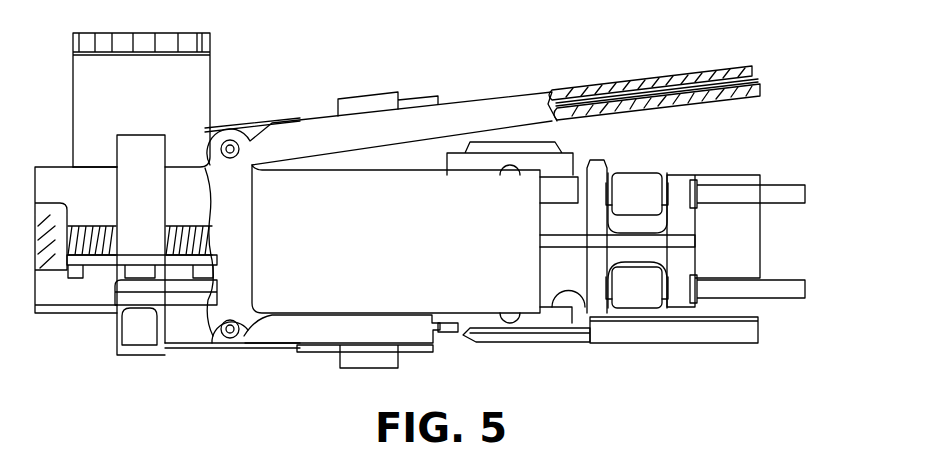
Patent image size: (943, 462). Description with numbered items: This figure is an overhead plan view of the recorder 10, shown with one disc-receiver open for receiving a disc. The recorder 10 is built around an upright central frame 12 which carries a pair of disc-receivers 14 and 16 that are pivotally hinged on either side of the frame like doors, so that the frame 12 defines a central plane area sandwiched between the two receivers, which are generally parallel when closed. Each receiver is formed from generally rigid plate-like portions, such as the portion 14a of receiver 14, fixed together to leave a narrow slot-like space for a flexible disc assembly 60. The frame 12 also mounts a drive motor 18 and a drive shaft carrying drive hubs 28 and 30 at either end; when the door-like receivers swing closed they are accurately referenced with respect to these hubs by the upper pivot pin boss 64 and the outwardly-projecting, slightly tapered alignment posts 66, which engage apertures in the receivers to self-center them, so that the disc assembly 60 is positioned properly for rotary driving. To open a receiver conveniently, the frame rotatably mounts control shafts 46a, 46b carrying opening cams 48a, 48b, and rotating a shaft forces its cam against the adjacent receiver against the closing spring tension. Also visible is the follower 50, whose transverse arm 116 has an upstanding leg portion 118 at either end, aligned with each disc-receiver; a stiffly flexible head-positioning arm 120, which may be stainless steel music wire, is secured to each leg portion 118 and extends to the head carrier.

The recorder 10 is at (413, 76).
The central frame 12 is at (489, 281).
The disc-receiver 14 is at (382, 94).
The plate-like portion 14a is at (597, 88).
The disc-receiver 16 is at (756, 340).
The drive motor 18 is at (146, 83).
The drive hub 28 is at (513, 340).
The drive hub 30 is at (562, 150).
The shaft 46a is at (797, 283).
The shaft 46b is at (797, 185).
The opening cam 48a is at (641, 300).
The opening cam 48b is at (655, 172).
The follower 50 is at (110, 148).
The flexible disc assembly 60 is at (763, 76).
The upper pivot pin boss 64 is at (244, 320).
The alignment post 66 is at (607, 163).
The transverse arm 116 is at (114, 203).
The upstanding leg portion 118 is at (136, 140).
The head-positioning arm 120 is at (210, 130).